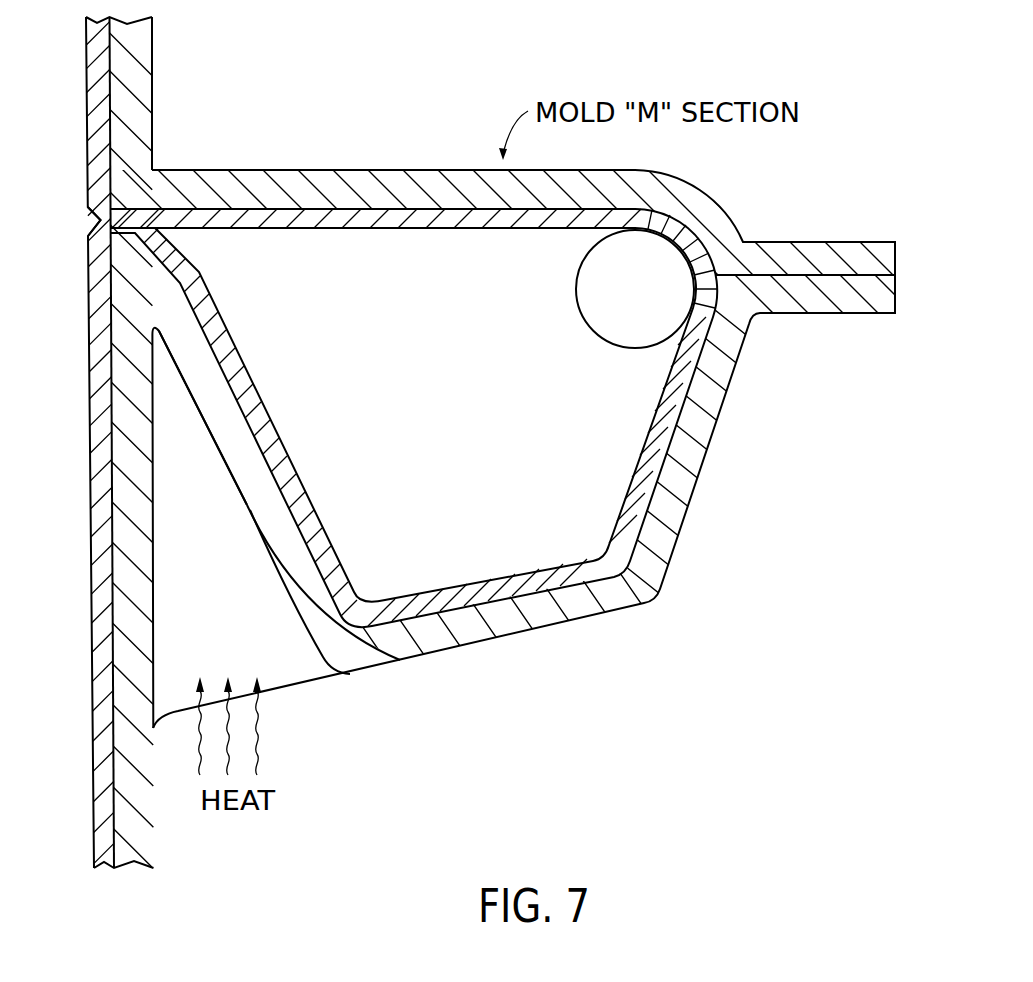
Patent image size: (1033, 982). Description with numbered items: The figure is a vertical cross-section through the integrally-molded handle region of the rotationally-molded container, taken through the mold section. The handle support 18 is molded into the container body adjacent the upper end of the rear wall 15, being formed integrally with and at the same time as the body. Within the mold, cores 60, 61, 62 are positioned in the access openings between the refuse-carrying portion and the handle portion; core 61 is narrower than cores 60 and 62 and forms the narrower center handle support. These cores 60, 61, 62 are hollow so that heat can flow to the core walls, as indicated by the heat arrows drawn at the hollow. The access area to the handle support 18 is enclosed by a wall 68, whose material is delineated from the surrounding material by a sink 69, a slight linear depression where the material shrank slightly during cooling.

The rear wall 15 is at (108, 788).
The handle support 18 is at (358, 212).
The core 60 is at (247, 515).
The core 61 is at (166, 566).
The core 62 is at (303, 654).
The wall 68 is at (102, 524).
The sink 69 is at (76, 217).